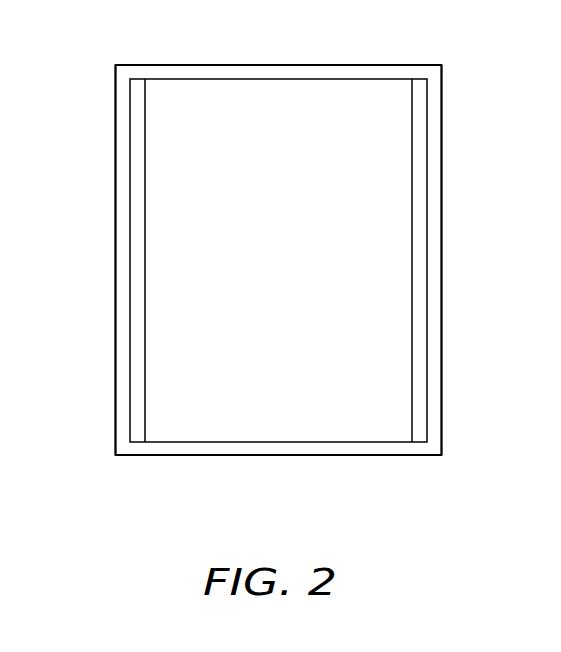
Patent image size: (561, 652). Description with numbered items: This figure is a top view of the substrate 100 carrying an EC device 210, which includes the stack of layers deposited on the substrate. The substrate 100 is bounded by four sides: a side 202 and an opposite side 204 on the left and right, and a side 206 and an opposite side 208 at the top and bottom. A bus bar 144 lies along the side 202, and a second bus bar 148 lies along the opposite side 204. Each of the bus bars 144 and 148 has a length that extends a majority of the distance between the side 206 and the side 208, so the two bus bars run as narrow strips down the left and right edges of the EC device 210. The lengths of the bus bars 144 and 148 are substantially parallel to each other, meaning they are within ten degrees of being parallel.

The substrate 100 is at (433, 250).
The bus bar 144 is at (120, 323).
The bus bar 148 is at (423, 208).
The side 202 is at (114, 124).
The side 204 is at (444, 117).
The side 206 is at (253, 62).
The side 208 is at (293, 458).
The EC device 210 is at (299, 272).